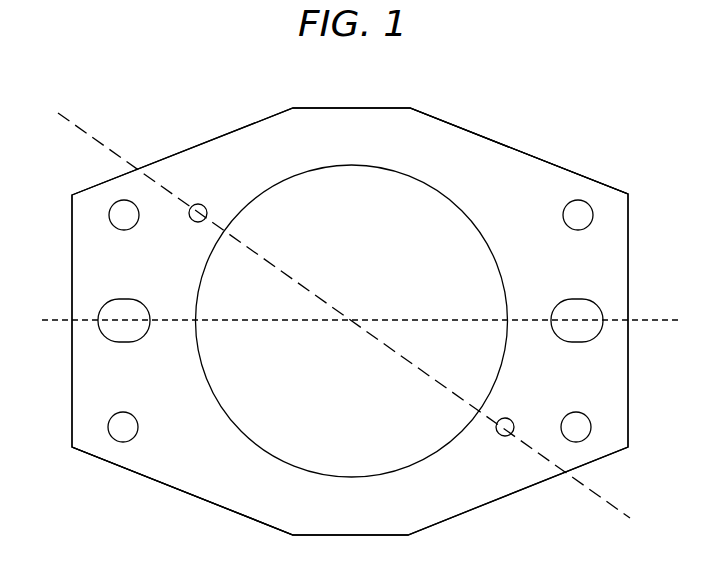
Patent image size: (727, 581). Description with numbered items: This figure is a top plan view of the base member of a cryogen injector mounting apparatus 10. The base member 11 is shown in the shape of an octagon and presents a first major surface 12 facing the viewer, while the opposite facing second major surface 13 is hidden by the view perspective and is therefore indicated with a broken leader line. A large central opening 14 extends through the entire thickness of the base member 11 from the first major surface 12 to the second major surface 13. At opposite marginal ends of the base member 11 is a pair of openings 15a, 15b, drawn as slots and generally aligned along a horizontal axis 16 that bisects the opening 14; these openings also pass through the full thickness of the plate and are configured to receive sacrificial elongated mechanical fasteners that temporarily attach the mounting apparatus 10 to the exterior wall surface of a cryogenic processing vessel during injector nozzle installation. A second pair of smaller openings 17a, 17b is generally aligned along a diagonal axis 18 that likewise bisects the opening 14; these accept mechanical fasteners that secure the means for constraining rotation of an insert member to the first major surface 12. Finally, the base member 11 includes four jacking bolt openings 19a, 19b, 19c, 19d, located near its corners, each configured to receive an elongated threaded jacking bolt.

The mounting apparatus 10 is at (216, 75).
The base member 11 is at (490, 131).
The first major surface 12 is at (528, 222).
The second major surface 13 is at (185, 492).
The opening 14 is at (362, 422).
The opening 15a is at (105, 339).
The opening 15b is at (596, 339).
The axis 16 is at (443, 318).
The opening 17a is at (200, 204).
The opening 17b is at (500, 437).
The axis 18 is at (293, 280).
The jacking bolt opening 19a is at (110, 210).
The jacking bolt opening 19b is at (108, 433).
The jacking bolt opening 19c is at (591, 210).
The jacking bolt opening 19d is at (591, 433).